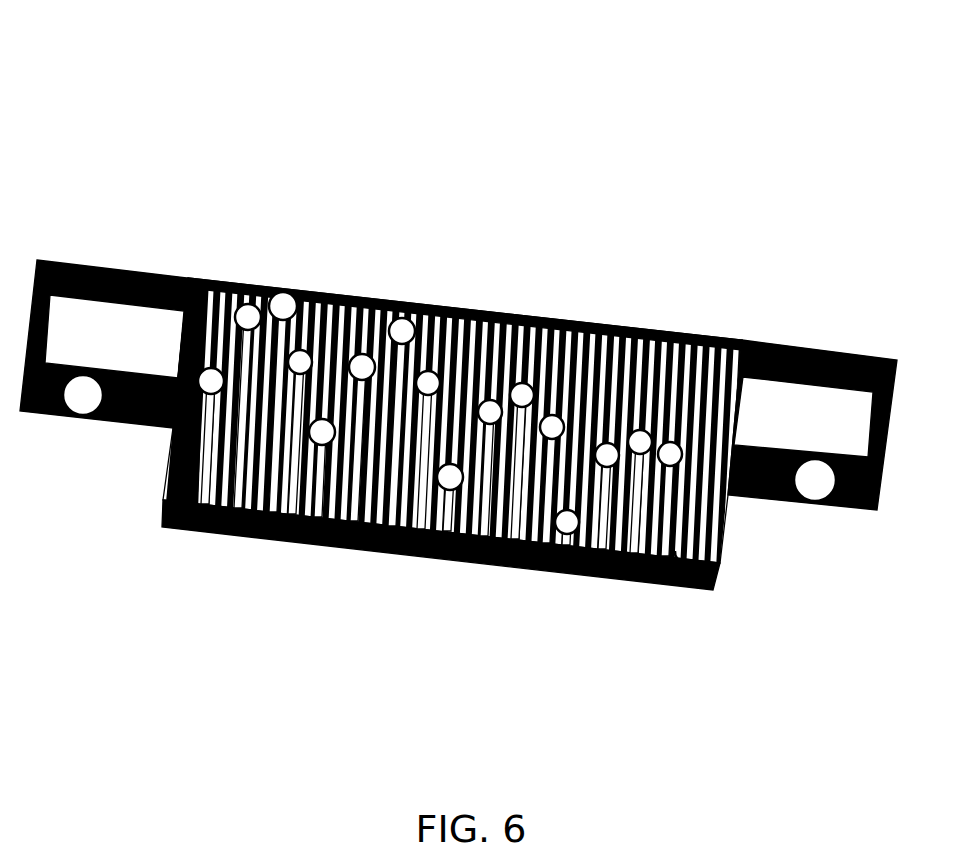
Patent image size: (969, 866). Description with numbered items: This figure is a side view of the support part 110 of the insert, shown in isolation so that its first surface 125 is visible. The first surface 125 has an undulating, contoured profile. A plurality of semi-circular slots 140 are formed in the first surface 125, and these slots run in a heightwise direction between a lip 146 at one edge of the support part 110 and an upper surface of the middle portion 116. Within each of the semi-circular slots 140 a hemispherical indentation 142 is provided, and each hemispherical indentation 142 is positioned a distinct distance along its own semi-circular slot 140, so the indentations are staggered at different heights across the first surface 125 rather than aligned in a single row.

The support part 110 is at (608, 93).
The middle portion 116 is at (421, 300).
The first surface 125 is at (583, 307).
The semi-circular slot 140 is at (313, 300).
The hemispherical indentation 142 is at (247, 304).
The lip 146 is at (512, 563).